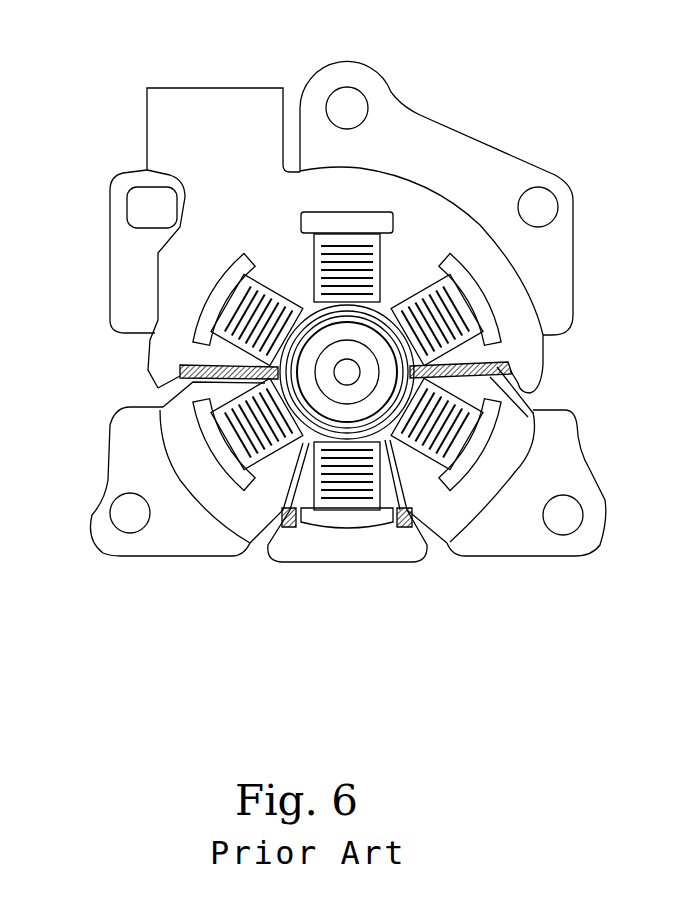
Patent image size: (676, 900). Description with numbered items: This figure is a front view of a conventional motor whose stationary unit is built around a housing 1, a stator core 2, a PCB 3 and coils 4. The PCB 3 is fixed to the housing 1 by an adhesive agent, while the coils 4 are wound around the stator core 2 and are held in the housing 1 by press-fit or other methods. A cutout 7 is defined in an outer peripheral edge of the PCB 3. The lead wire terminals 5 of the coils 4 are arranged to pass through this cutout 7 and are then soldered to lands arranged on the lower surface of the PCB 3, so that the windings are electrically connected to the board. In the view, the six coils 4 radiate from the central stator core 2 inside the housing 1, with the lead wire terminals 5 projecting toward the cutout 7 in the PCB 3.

The housing 1 is at (478, 160).
The stator core 2 is at (210, 428).
The PCB 3 is at (228, 108).
The coils 4 is at (365, 226).
The lead wire terminals 5 is at (207, 363).
The cutout 7 is at (295, 530).